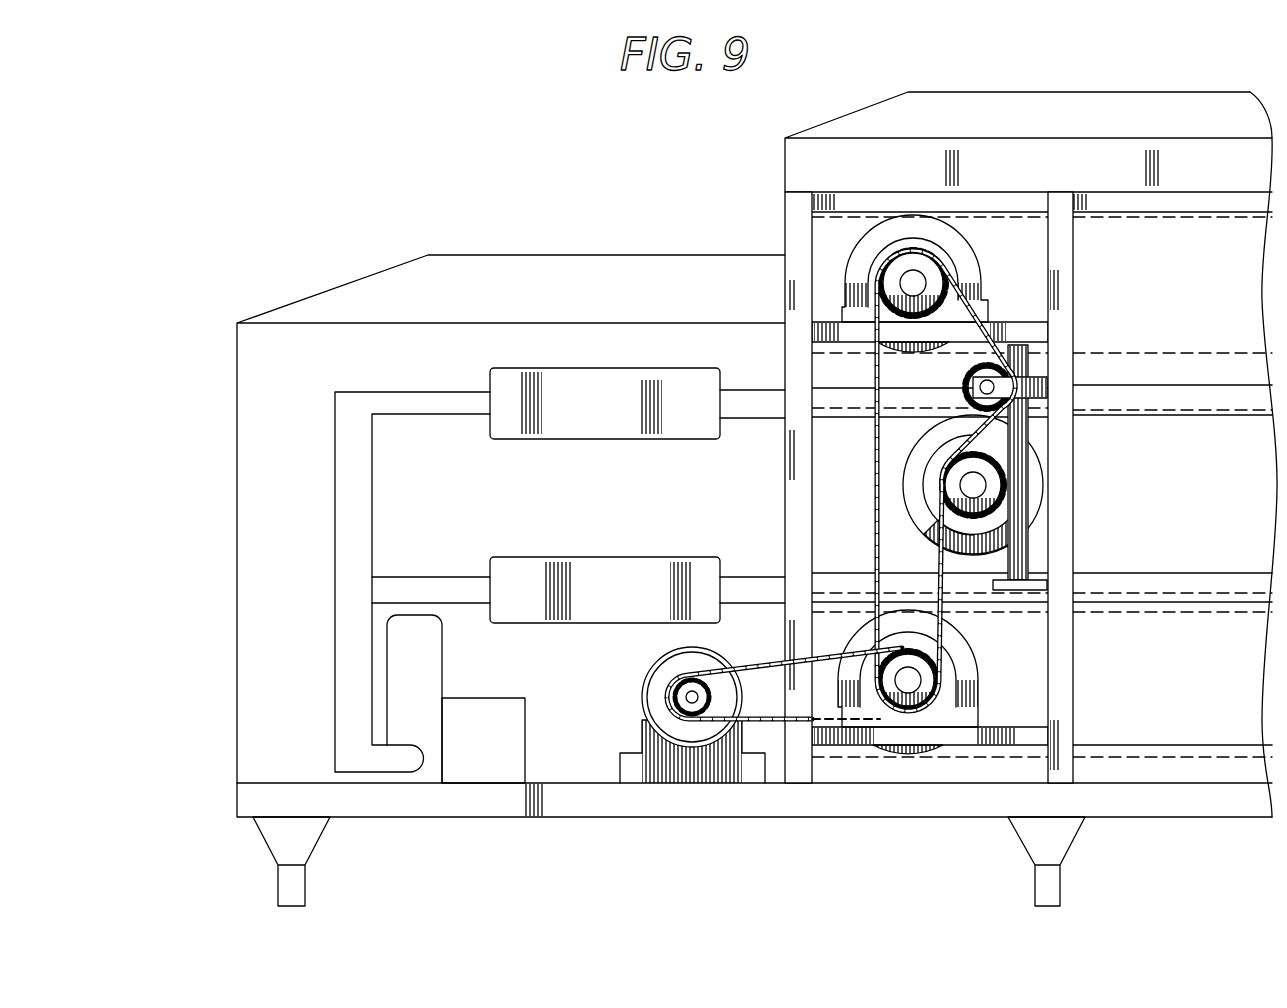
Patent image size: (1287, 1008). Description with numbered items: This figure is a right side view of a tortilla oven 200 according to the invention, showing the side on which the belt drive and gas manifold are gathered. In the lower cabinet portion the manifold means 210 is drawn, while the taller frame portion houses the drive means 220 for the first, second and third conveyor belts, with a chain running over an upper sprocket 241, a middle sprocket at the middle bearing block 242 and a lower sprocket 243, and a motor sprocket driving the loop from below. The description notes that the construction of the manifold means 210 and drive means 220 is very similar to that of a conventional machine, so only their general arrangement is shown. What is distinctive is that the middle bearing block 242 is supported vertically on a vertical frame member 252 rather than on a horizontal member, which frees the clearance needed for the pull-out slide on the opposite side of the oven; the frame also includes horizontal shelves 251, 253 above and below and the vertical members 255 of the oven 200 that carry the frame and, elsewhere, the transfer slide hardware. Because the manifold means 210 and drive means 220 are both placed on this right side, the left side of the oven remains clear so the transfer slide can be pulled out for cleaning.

The oven 200 is at (463, 133).
The manifold means 210 is at (540, 687).
The drive means 220 is at (777, 752).
The upper drive sprocket 241 is at (958, 270).
The middle bearing block 242 is at (925, 505).
The lower drive sprocket 243 is at (948, 683).
The upper support shelf 251 is at (835, 338).
The vertical frame member 252 is at (1025, 488).
The lower support shelf 253 is at (1010, 727).
The vertical member 255 is at (795, 502).